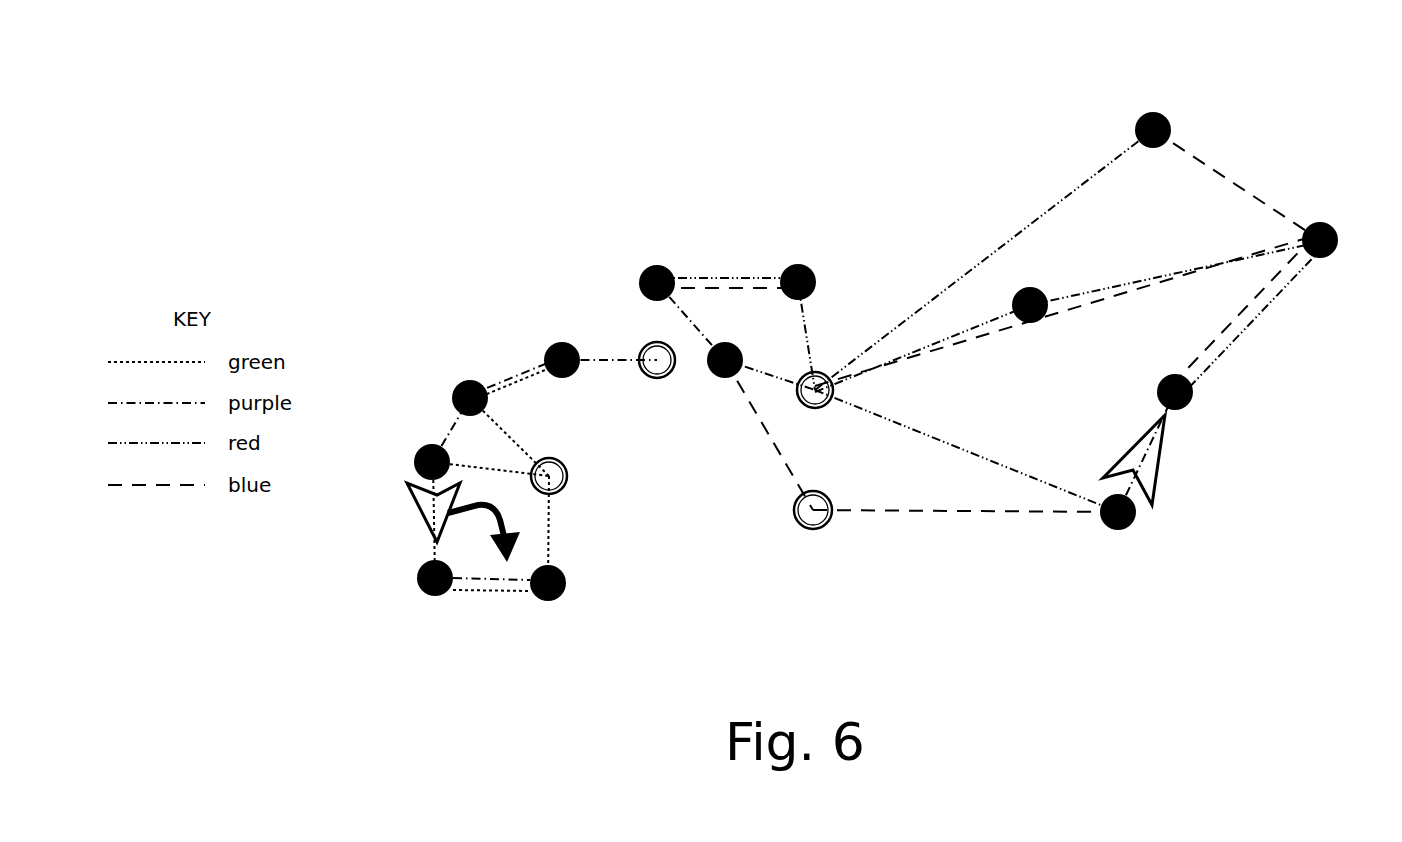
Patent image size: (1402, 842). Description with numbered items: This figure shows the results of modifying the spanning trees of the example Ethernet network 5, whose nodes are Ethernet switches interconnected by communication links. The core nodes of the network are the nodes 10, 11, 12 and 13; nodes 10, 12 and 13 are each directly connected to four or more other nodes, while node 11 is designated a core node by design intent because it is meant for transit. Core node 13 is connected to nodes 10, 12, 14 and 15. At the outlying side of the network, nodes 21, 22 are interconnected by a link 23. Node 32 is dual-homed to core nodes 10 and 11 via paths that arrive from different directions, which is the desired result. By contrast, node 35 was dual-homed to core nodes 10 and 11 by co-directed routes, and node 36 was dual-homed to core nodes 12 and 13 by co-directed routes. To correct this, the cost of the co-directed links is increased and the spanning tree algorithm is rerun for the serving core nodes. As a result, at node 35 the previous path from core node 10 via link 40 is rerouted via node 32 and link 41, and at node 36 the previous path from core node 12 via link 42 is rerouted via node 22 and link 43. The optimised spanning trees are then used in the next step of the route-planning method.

The Ethernet network 5 is at (880, 172).
The core node 10 is at (559, 494).
The core node 11 is at (642, 348).
The core node 12 is at (818, 371).
The core node 13 is at (814, 530).
The node 14 is at (725, 344).
The node 15 is at (1125, 531).
The outlying node 21 is at (1155, 108).
The outlying node 22 is at (1335, 226).
The link 23 is at (1240, 185).
The node 32 is at (550, 600).
The node 35 is at (432, 596).
The node 36 is at (1188, 409).
The link 40 is at (430, 552).
The link 41 is at (496, 594).
The link 42 is at (1166, 420).
The link 43 is at (1213, 371).